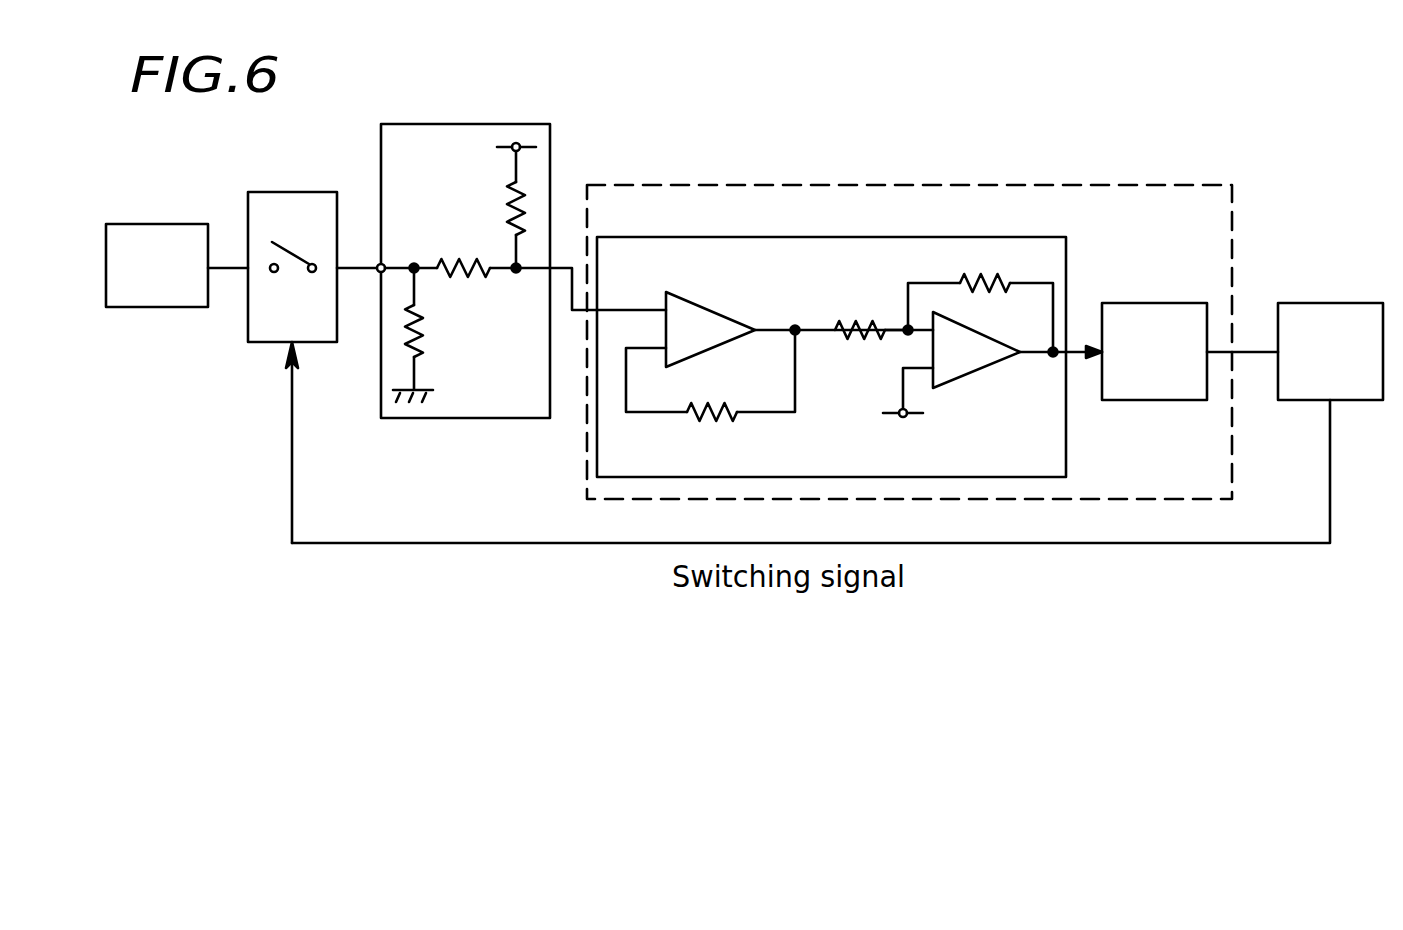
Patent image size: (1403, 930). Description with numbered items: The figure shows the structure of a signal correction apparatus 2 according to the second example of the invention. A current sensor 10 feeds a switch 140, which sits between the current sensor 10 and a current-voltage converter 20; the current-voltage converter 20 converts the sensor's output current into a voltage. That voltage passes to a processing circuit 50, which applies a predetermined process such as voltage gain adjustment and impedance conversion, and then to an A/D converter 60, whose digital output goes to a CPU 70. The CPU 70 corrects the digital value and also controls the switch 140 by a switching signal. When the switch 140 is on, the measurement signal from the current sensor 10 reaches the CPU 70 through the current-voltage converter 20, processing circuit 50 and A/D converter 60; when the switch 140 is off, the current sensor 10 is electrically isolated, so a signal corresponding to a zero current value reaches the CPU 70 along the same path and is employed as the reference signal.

The signal correction apparatus 2 is at (818, 688).
The current sensor 10 is at (172, 307).
The switch 140 is at (310, 192).
The current-voltage converter 20 is at (552, 163).
The processing circuit 50 is at (873, 237).
The A/D converter 60 is at (1157, 303).
The CPU 70 is at (1337, 303).